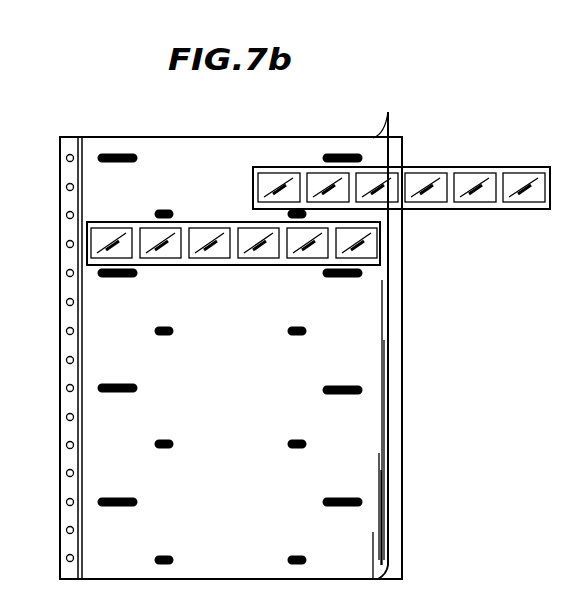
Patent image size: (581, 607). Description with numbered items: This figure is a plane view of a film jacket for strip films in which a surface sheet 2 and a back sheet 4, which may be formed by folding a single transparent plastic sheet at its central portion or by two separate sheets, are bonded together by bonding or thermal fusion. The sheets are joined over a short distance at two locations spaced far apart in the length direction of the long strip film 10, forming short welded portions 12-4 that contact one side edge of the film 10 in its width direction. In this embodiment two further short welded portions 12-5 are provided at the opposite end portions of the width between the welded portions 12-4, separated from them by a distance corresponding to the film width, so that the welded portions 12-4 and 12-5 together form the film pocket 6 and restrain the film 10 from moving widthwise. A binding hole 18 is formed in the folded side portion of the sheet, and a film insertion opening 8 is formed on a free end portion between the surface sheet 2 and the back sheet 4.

The surface sheet 2 is at (389, 500).
The back sheet 4 is at (403, 555).
The film pocket 6 is at (147, 175).
The film insertion opening 8 is at (397, 343).
The long strip film 10 is at (475, 166).
The short welded portions 12-4 is at (117, 152).
The short welded portion 12-5 is at (165, 209).
The binding hole 18 is at (66, 391).